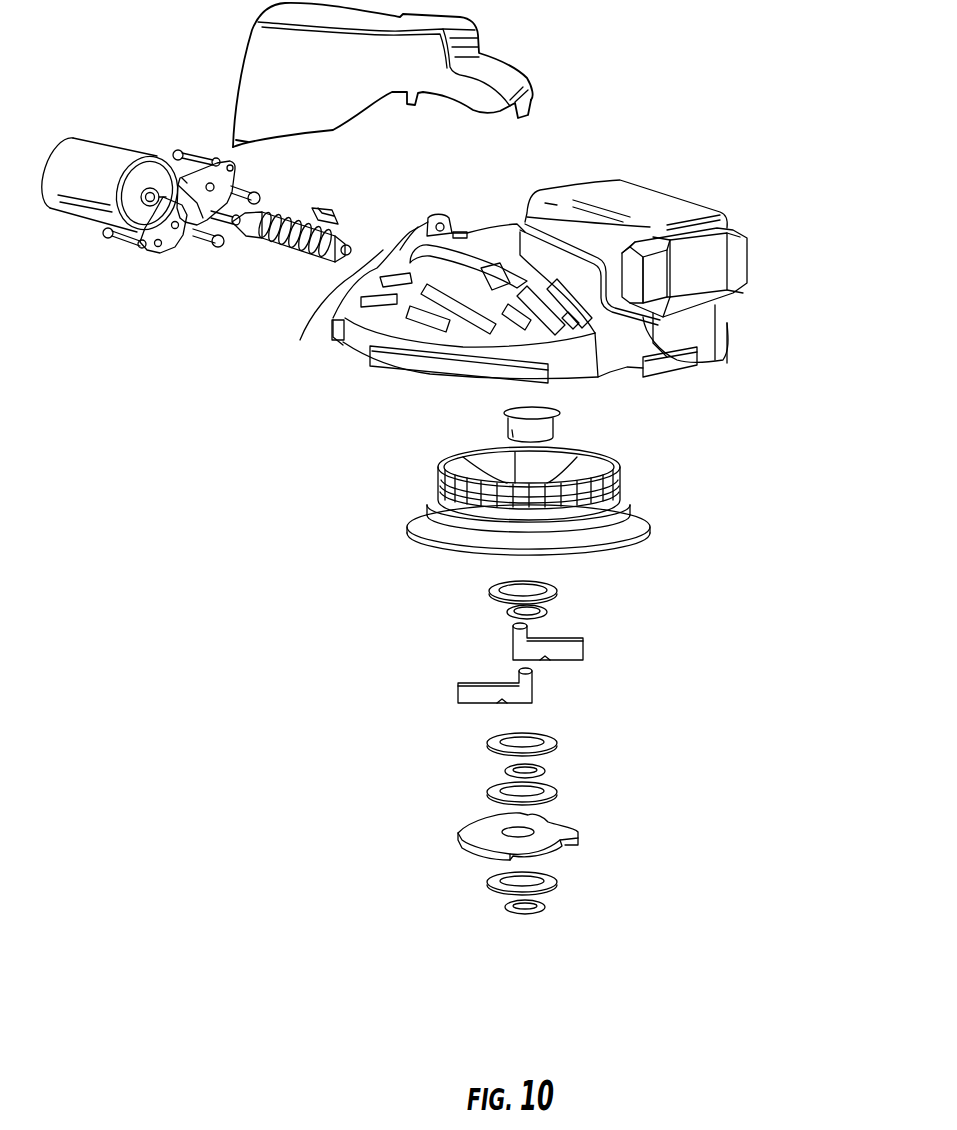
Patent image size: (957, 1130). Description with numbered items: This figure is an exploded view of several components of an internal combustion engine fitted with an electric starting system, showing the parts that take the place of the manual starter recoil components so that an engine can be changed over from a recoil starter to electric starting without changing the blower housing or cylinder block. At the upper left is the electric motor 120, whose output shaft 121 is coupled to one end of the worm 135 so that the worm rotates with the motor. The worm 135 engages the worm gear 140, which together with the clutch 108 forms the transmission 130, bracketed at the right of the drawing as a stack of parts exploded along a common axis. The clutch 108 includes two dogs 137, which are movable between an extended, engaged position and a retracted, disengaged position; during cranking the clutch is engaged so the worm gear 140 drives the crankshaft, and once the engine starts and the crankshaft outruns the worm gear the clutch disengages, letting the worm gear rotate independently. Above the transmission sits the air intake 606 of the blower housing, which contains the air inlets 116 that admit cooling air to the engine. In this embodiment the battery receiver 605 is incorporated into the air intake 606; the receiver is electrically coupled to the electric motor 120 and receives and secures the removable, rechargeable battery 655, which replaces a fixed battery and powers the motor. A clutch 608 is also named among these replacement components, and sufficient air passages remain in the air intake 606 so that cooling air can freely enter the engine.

The electric motor 120 is at (100, 142).
The output shaft 121 is at (157, 198).
The worm 135 is at (282, 243).
The clutch 608 is at (353, 290).
The air inlets 116 is at (472, 315).
The air intake 606 is at (570, 352).
The battery receiver 605 is at (697, 363).
The removable battery 655 is at (700, 197).
The worm gear 140 is at (632, 517).
The dogs 137 is at (566, 650).
The clutch 108 is at (580, 832).
The transmission 130 is at (803, 402).